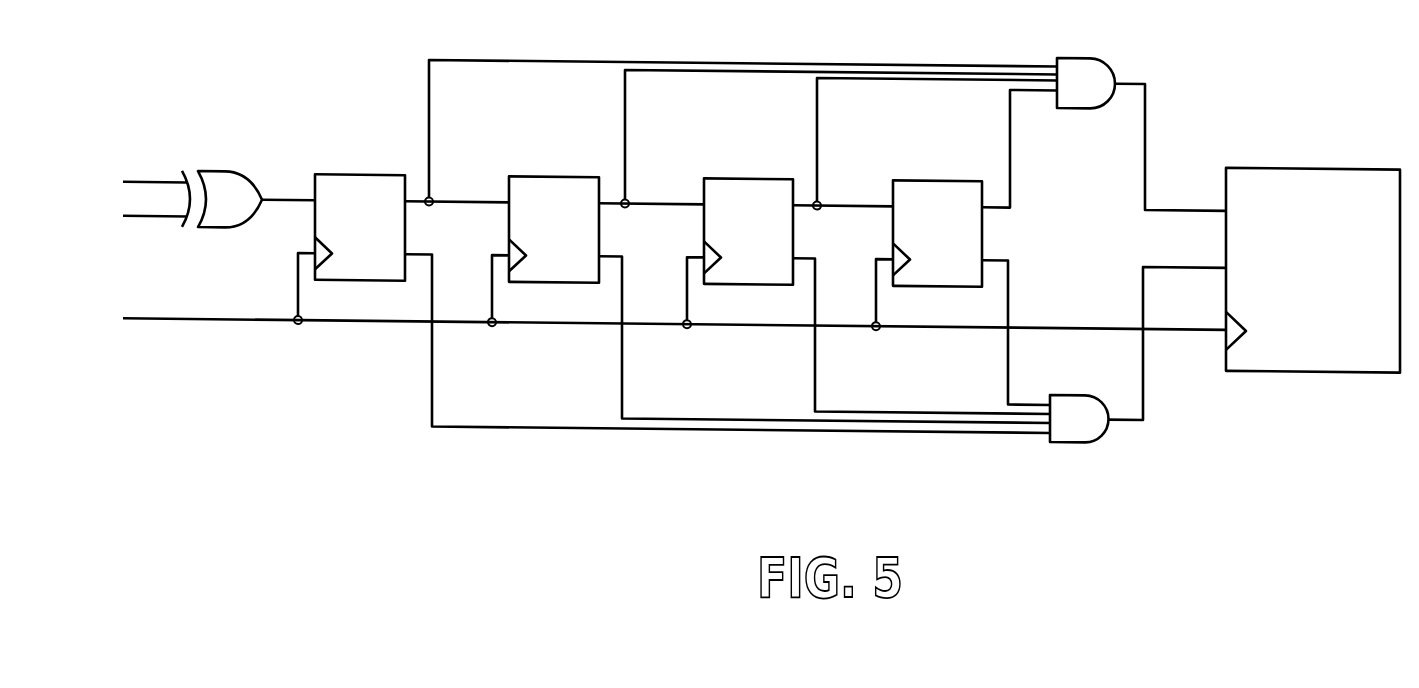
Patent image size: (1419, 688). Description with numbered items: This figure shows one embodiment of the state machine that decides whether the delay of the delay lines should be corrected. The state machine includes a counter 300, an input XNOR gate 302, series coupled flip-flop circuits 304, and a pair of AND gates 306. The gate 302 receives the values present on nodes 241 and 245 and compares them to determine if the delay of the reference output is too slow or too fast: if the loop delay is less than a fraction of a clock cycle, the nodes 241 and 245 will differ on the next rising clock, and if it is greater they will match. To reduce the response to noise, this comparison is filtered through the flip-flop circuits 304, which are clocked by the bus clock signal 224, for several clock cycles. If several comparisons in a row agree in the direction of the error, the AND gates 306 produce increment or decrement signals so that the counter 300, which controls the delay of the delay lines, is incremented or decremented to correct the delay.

The bus clock signal 224 is at (142, 320).
The node 241 is at (137, 178).
The node 245 is at (137, 218).
The counter 300 is at (1257, 154).
The input XNOR gate 302 is at (219, 170).
The flip-flop circuits 304 is at (355, 170).
The AND gates 306 is at (1080, 46).